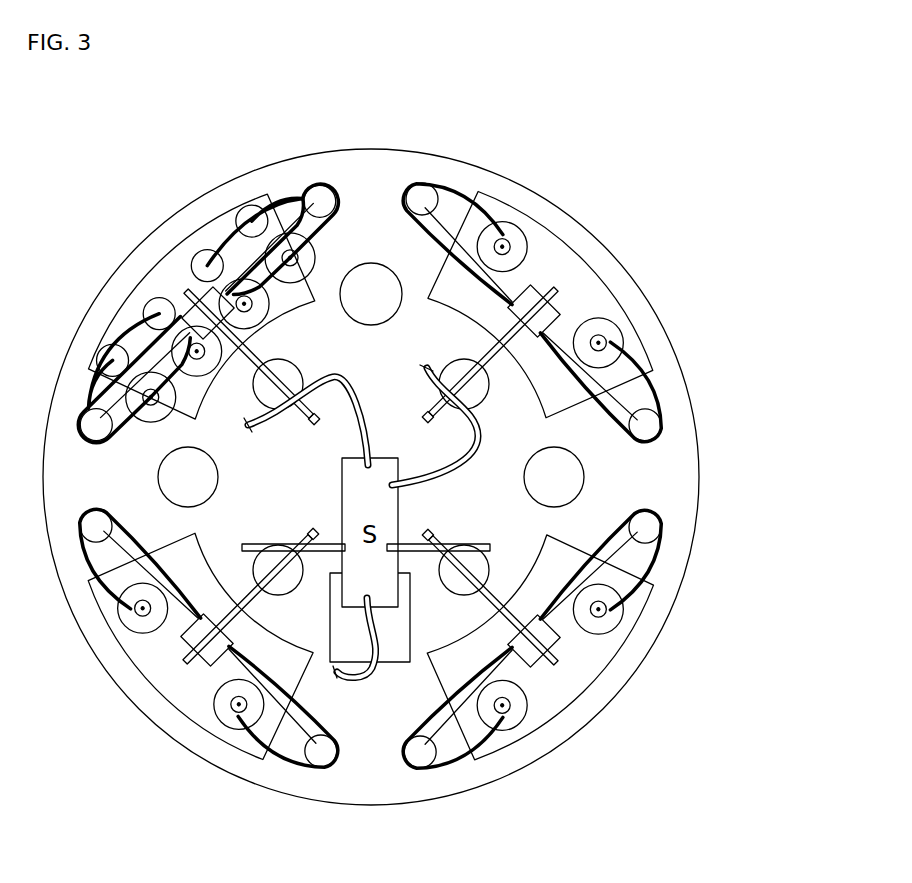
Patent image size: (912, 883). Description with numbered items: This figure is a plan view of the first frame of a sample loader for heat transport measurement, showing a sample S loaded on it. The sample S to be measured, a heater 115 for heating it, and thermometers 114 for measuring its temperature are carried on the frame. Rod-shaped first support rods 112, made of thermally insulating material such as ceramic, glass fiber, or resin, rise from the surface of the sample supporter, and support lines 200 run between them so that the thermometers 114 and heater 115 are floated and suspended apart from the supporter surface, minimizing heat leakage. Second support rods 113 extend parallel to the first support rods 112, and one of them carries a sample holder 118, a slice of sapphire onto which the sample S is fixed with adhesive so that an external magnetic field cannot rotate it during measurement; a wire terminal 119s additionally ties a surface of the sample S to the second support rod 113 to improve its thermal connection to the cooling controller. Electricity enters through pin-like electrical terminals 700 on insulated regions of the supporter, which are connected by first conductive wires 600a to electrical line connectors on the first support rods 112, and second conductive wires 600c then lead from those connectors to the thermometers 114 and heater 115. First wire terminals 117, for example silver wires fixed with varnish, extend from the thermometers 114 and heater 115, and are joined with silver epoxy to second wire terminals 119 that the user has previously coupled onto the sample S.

The first support rods 112 is at (420, 172).
The second support rods 113 is at (606, 477).
The thermometers 114 is at (558, 310).
The heater 115 is at (243, 302).
The first wire terminals 117 is at (508, 374).
The sample holder 118 is at (393, 647).
The second wire terminals 119 is at (353, 378).
The wire terminal 119s is at (357, 683).
The support lines 200 is at (599, 641).
The first conductive wires 600a is at (616, 580).
The second conductive wires 600c is at (470, 716).
The electrical terminals 700 is at (135, 616).